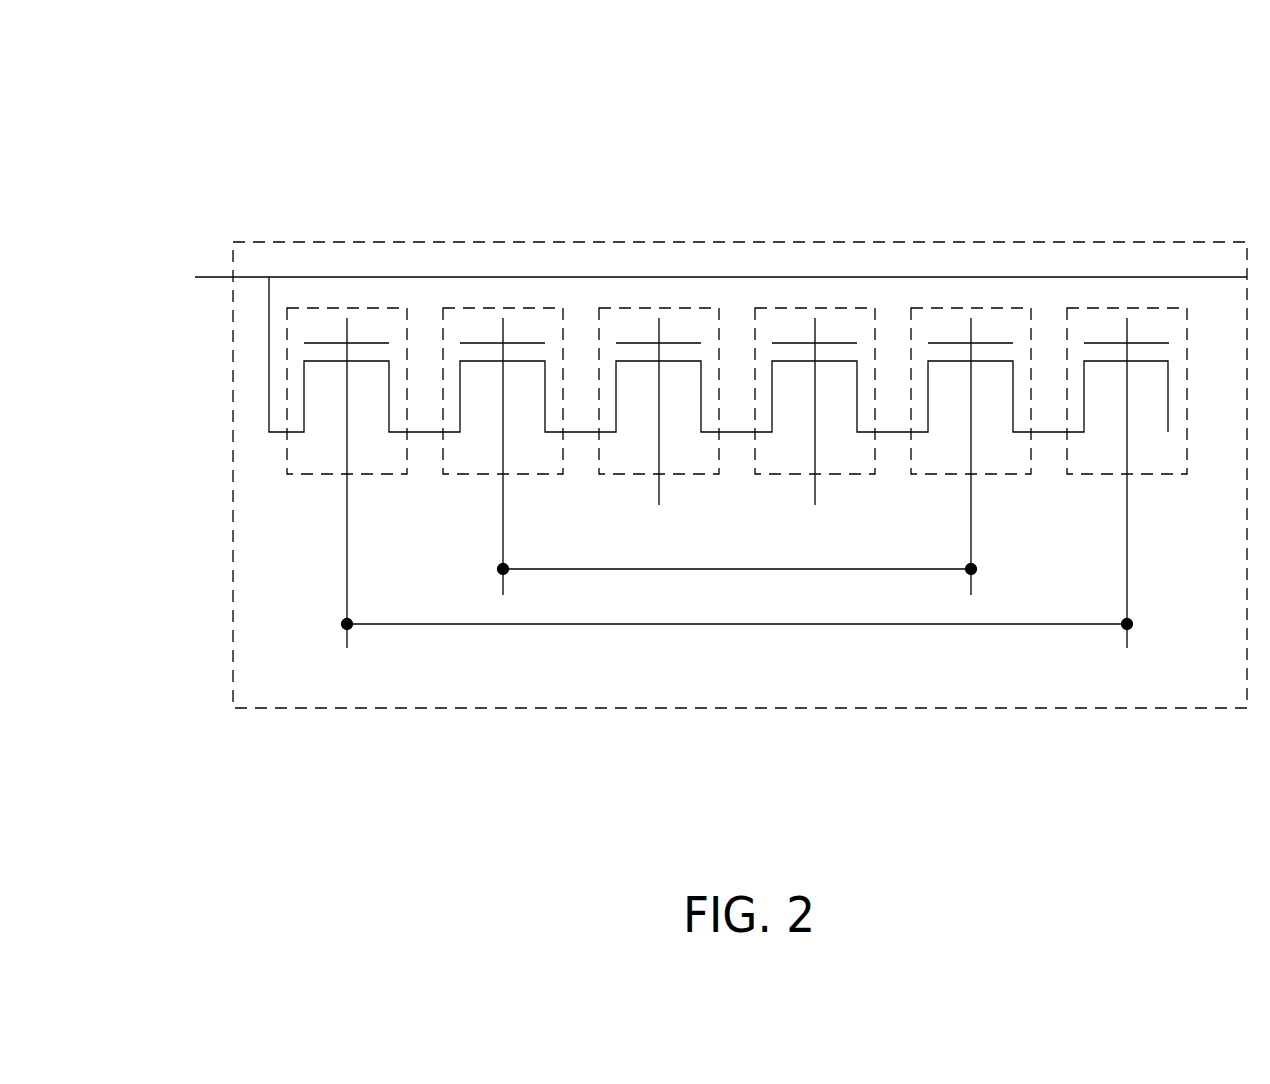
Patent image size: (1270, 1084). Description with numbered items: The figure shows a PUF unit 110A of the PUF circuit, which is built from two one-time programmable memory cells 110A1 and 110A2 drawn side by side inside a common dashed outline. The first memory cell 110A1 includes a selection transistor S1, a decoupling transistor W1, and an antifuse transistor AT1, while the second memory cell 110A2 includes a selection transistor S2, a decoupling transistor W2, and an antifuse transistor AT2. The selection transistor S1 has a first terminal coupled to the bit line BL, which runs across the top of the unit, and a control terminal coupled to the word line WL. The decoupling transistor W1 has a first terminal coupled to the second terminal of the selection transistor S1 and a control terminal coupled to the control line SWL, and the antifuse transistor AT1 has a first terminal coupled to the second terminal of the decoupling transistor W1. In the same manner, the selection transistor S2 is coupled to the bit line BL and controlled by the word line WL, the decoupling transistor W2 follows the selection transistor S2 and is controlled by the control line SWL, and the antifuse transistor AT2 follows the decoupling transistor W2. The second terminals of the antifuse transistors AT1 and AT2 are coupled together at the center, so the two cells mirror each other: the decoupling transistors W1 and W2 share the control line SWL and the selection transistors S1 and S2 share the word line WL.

The PUF unit 110A is at (1070, 126).
The OTP memory cell 110A1 is at (720, 247).
The OTP memory cell 110A2 is at (1187, 247).
The selection transistor S1 is at (312, 473).
The decoupling transistor W1 is at (468, 473).
The antifuse transistor AT1 is at (624, 473).
The antifuse transistor AT2 is at (780, 473).
The decoupling transistor W2 is at (936, 473).
The selection transistor S2 is at (1092, 473).
The bit line BL is at (702, 278).
The control line SWL is at (737, 585).
The word line WL is at (737, 640).